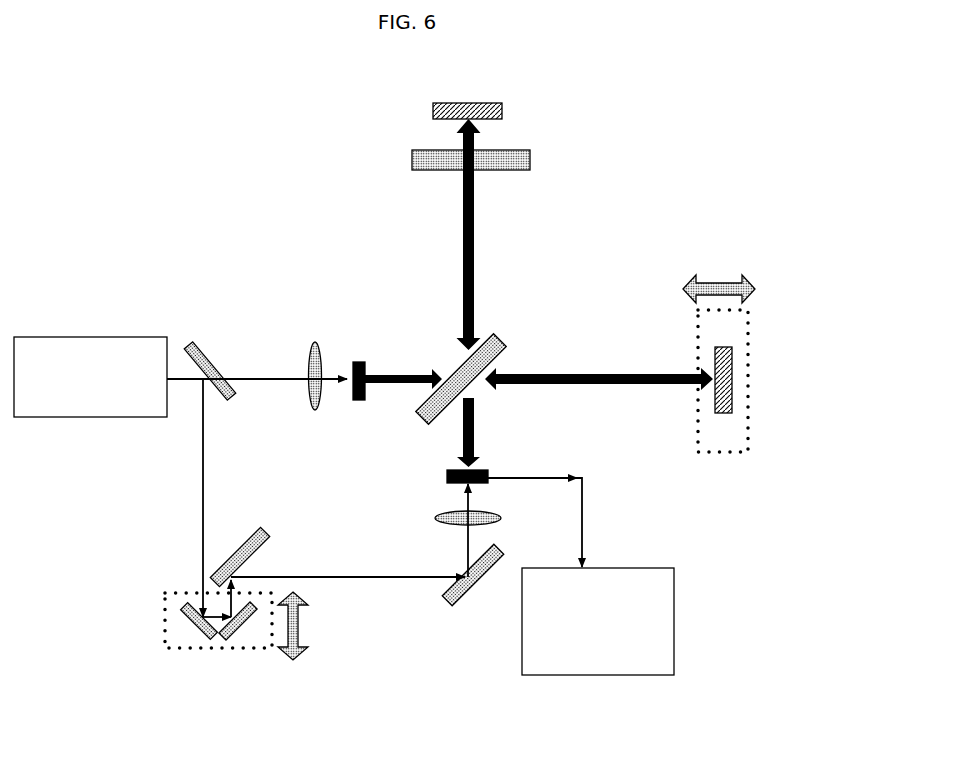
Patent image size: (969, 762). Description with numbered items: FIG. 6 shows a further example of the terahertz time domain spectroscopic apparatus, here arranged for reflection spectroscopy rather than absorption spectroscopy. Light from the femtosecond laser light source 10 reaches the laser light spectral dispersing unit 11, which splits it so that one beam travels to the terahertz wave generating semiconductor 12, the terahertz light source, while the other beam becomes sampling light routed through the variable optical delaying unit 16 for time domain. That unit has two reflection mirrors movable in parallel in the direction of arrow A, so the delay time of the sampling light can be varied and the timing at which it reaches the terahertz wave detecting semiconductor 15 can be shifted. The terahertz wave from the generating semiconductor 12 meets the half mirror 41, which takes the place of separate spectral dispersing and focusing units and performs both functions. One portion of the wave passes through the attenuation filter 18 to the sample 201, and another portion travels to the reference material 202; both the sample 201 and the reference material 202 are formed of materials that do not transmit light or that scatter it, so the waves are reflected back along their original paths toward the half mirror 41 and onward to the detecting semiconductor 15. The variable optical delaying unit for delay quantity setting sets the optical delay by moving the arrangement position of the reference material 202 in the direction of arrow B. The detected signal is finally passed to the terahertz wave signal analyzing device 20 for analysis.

The femtosecond laser light source 10 is at (84, 338).
The laser light spectral dispersing unit 11 is at (211, 355).
The terahertz wave generating semiconductor 12 is at (357, 362).
The half mirror 41 is at (495, 347).
The terahertz wave detecting semiconductor 15 is at (488, 470).
The variable optical delaying unit for time domain 16 is at (165, 625).
The attenuation filter 18 is at (530, 160).
The terahertz wave signal analyzing device 20 is at (600, 568).
The sample 201 is at (502, 108).
The reference material 202 is at (722, 347).